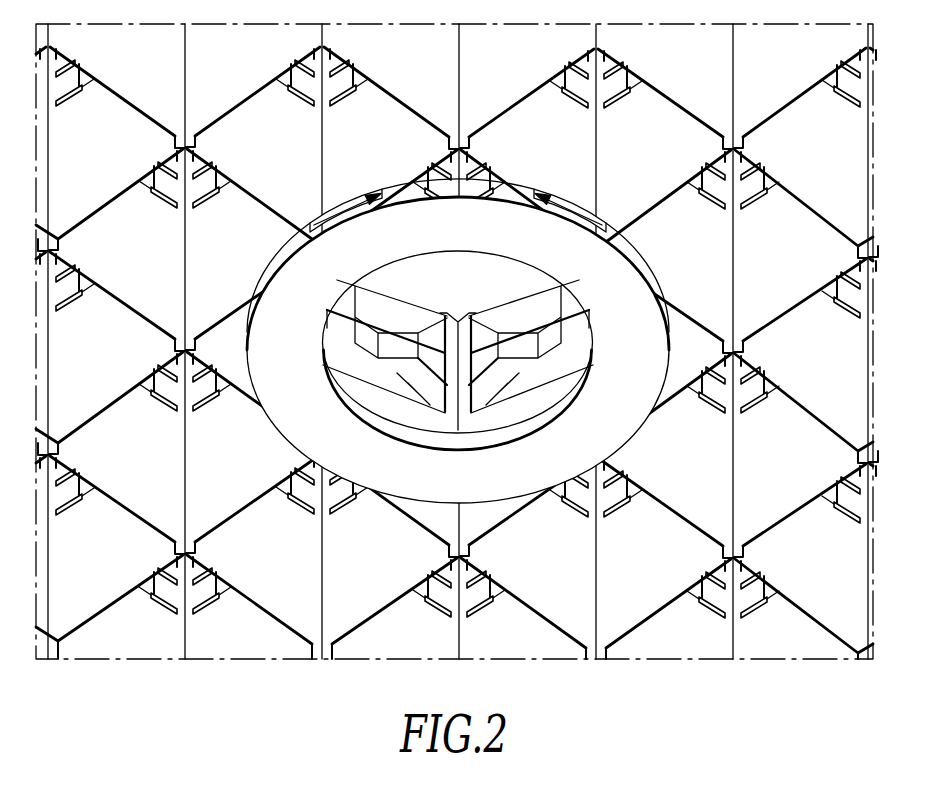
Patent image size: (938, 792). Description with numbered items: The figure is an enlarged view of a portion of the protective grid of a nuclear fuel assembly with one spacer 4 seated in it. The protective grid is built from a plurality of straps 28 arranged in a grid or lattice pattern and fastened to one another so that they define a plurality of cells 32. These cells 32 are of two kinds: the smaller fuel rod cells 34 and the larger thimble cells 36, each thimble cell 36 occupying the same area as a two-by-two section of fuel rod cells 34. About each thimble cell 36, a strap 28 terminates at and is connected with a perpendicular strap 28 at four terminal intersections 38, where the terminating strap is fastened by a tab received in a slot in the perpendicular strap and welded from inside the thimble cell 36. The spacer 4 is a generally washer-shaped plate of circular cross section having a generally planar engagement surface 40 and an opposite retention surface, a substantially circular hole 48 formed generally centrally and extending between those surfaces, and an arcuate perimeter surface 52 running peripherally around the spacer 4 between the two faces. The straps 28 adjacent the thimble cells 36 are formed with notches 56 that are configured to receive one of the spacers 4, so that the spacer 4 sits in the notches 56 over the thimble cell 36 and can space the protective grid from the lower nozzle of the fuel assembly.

The spacer 4 is at (477, 341).
The strap 28 is at (100, 617).
The cell 32 is at (507, 511).
The fuel rod cell 34 is at (626, 634).
The thimble cell 36 is at (490, 522).
The terminal intersection 38 is at (327, 172).
The engagement surface 40 is at (612, 431).
The hole 48 is at (398, 432).
The arcuate perimeter surface 52 is at (643, 258).
The notch 56 is at (320, 232).